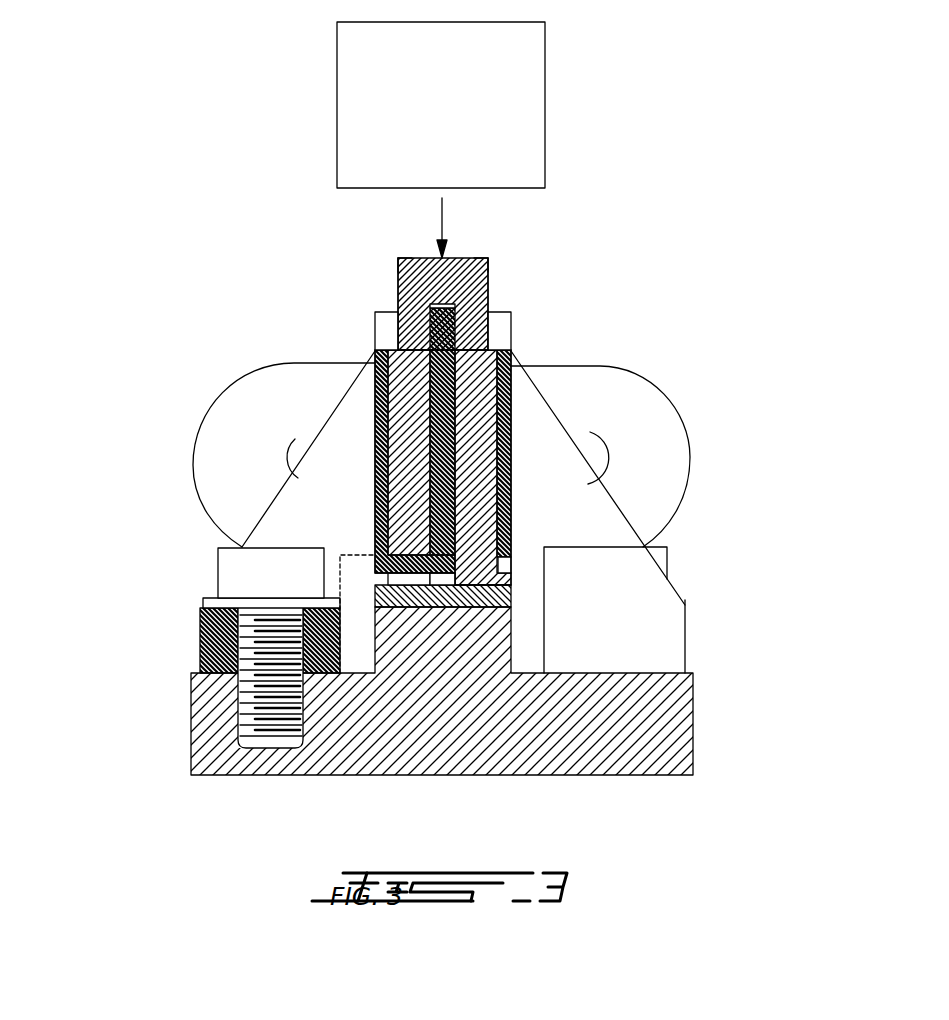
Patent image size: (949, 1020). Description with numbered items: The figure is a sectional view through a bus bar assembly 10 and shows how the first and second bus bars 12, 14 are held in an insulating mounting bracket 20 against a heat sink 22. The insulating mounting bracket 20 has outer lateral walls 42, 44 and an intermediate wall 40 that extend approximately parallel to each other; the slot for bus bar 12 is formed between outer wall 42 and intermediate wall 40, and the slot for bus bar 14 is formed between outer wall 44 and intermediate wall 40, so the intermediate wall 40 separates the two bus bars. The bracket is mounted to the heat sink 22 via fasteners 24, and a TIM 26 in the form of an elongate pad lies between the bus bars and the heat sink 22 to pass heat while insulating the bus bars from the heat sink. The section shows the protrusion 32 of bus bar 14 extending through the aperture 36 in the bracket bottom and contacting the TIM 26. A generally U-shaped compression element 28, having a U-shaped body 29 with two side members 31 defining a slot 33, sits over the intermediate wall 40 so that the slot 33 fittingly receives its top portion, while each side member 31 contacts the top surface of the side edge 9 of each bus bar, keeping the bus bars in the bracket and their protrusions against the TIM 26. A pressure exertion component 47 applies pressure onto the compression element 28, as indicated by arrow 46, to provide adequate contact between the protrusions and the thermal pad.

The bus bar assembly 10 is at (806, 304).
The first bus bar 12 is at (407, 445).
The second bus bar 14 is at (472, 400).
The insulating mounting bracket 20 is at (369, 346).
The heat sink 22 is at (637, 725).
The fasteners 24 is at (243, 573).
The TIM 26 is at (511, 597).
The compression element 28 is at (488, 278).
The U-shaped body 29 is at (398, 258).
The side members 31 is at (398, 303).
The protrusion 32 is at (511, 578).
The slot 33 is at (490, 265).
The aperture 36 is at (511, 562).
The intermediate wall 40 is at (458, 335).
The outer lateral wall 42 is at (388, 495).
The outer lateral wall 44 is at (511, 458).
The arrow 46 is at (442, 218).
The pressure exertion component 47 is at (545, 118).
The second side edge 9 is at (397, 350).